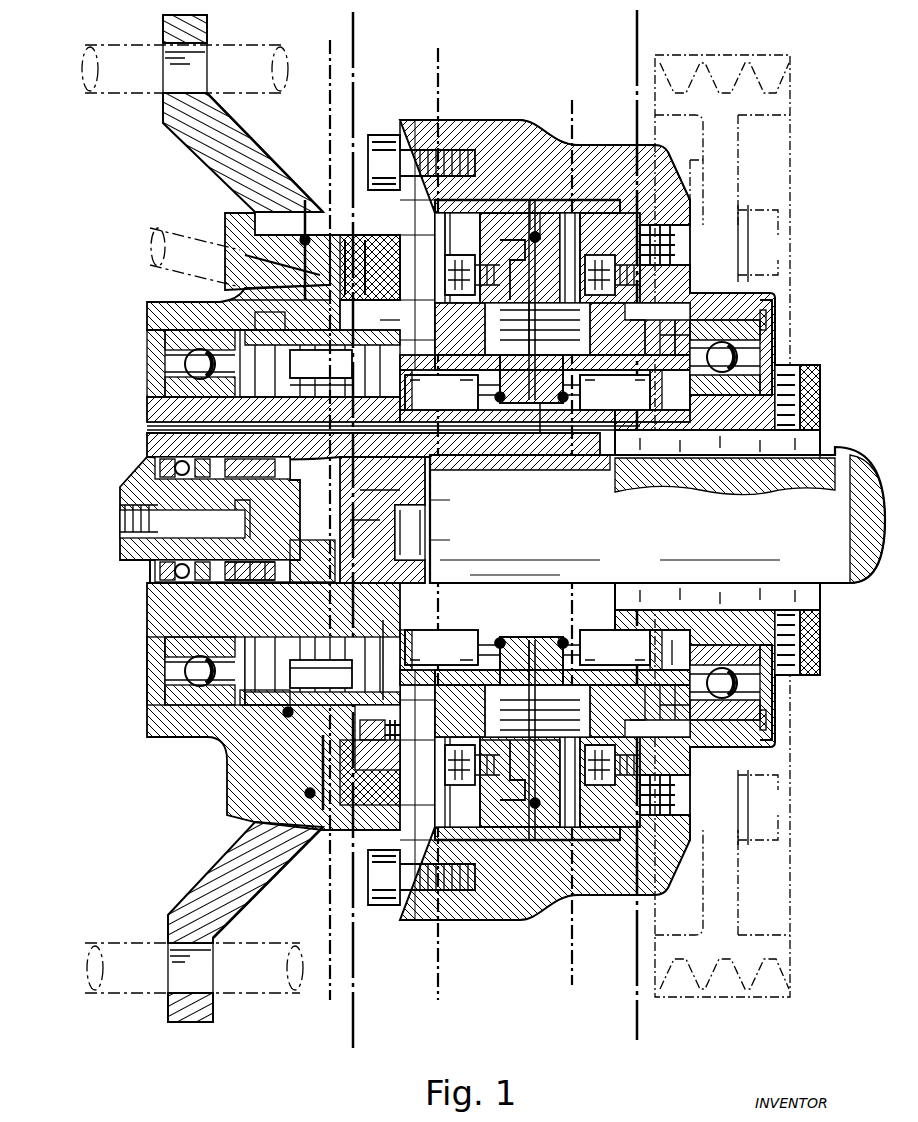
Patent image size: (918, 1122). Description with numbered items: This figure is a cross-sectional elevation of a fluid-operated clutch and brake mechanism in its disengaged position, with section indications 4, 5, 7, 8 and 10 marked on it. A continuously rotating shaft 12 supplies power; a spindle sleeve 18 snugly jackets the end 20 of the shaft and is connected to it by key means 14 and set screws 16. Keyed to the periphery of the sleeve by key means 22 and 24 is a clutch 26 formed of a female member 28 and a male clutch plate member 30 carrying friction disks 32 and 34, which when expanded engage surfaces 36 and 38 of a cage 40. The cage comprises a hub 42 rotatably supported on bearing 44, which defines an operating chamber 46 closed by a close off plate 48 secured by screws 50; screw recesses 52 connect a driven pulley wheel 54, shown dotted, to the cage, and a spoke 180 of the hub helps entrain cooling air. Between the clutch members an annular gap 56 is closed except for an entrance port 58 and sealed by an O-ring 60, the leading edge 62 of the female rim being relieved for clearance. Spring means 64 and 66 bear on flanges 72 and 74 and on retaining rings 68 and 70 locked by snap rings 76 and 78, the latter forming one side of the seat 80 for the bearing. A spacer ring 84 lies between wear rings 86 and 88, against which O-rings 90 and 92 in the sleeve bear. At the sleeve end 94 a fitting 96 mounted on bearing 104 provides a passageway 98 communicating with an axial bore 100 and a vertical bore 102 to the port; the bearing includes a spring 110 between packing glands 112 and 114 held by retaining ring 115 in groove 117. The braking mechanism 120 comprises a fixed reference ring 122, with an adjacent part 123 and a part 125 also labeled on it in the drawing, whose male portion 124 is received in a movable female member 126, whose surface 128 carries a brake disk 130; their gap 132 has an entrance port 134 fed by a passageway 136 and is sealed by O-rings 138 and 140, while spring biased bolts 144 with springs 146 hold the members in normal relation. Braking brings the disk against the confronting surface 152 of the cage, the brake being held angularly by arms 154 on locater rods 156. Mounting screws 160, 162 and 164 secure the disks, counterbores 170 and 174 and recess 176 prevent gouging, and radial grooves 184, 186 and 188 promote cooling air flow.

The section line 4- 4 is at (425, 60).
The section line 5- 5 is at (637, 28).
The section line 7- 7 is at (556, 110).
The section line 8- 8 is at (353, 25).
The section line 10- 10 is at (293, 18).
The shaft 12 is at (845, 585).
The key means 14 is at (820, 438).
The set screws 16 is at (820, 386).
The spindle sleeve 18 is at (820, 626).
The end of the shaft 20 is at (407, 486).
The key means 22 is at (458, 401).
The key means 24 is at (613, 395).
The clutch 26 is at (548, 210).
The female clutch member 28 is at (505, 201).
The male clutch plate member 30 is at (655, 180).
The friction disk 32 is at (440, 225).
The friction disk 34 is at (665, 205).
The surface 36 is at (440, 275).
The surface 38 is at (615, 290).
The cage 40 is at (497, 122).
The hub 42 is at (462, 121).
The bearing 44 is at (775, 297).
The operating chamber 46 is at (530, 207).
The close off plate 48 is at (405, 122).
The screws 50 is at (378, 135).
The screw recesses 52 is at (672, 266).
The pulley wheel 54 is at (786, 188).
The annular gap 56 is at (530, 327).
The entrance port 58 is at (520, 368).
The O-ring 60 is at (540, 240).
The leading edge of the rim of the female member 62 is at (585, 213).
The spring means 64 is at (412, 325).
The spring means 66 is at (655, 330).
The retaining ring 68 is at (375, 322).
The retaining ring 70 is at (670, 335).
The axially extending flange 72 is at (412, 385).
The axially extending flange 74 is at (655, 372).
The snap ring 76 is at (385, 630).
The snap ring 78 is at (678, 635).
The seat 80 is at (738, 387).
The spacer or snap-ring 84 is at (532, 635).
The wear ring 86 is at (520, 642).
The wear ring 88 is at (542, 642).
The O-ring 90 is at (500, 635).
The O-ring 92 is at (566, 635).
The end of the spindle sleeve 94 is at (150, 412).
The fitting 96 is at (130, 486).
The passageway 98 is at (225, 527).
The axially extending bore 100 is at (312, 436).
The connecting vertical bore 102 is at (548, 410).
The bearing 104 is at (155, 600).
The spring 110 is at (240, 582).
The packing gland 112 is at (222, 585).
The packing gland 114 is at (311, 565).
The retaining ring 115 is at (150, 566).
The groove 117 is at (150, 578).
The braking mechanism 120 is at (218, 181).
The reference ring 122 is at (165, 300).
The end wall 123 is at (160, 318).
The male portion 124 is at (264, 240).
The bearing 125 is at (170, 378).
The female member 126 is at (258, 143).
The surface 128 is at (365, 250).
The brake disk 130 is at (365, 230).
The gap 132 is at (230, 300).
The entrance port 134 is at (365, 268).
The passageway 136 is at (285, 300).
The O-rings 138 is at (295, 218).
The O-rings 140 is at (280, 328).
The spring biased bolts 144 is at (320, 508).
The spring 146 is at (312, 712).
The confronting surface 152 is at (392, 248).
The radially extending arms 154 is at (163, 117).
The locater rods 156 is at (90, 100).
The friction disk mounting screw 160 is at (520, 719).
The friction disk mounting screw 162 is at (550, 760).
The friction disk mounting screw 164 is at (318, 765).
The counterbore 170 is at (462, 760).
The counterbore 174 is at (608, 760).
The recess 176 is at (380, 760).
The spoke 180 is at (468, 918).
The grooves 184 is at (440, 798).
The grooves 186 is at (552, 258).
The grooves 188 is at (300, 205).